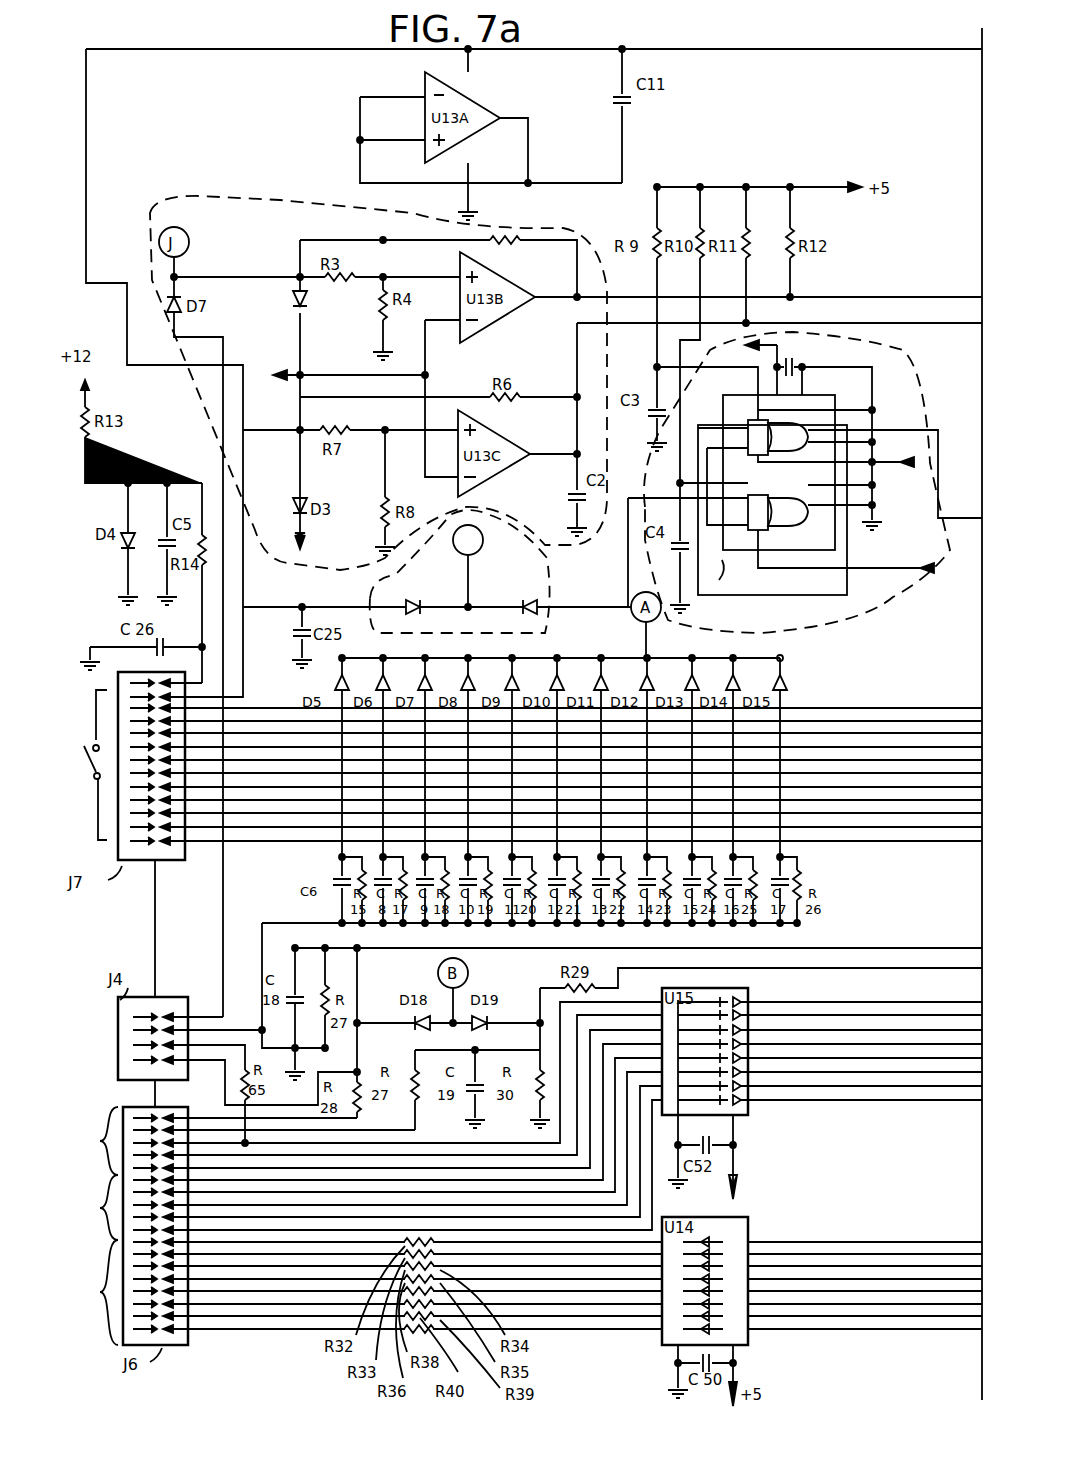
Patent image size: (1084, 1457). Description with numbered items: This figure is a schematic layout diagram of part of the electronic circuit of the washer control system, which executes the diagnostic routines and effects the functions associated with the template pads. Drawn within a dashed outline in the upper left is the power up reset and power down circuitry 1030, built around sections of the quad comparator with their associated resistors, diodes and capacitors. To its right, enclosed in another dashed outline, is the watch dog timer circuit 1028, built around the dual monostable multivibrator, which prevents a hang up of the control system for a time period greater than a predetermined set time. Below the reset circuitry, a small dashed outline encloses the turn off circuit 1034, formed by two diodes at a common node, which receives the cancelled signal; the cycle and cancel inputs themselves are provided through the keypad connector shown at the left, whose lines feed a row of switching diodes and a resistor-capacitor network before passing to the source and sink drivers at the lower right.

The power up reset and power down circuitry 1030 is at (208, 200).
The watch dog timer circuit 1028 is at (908, 376).
The turn off circuit 1034 is at (553, 622).